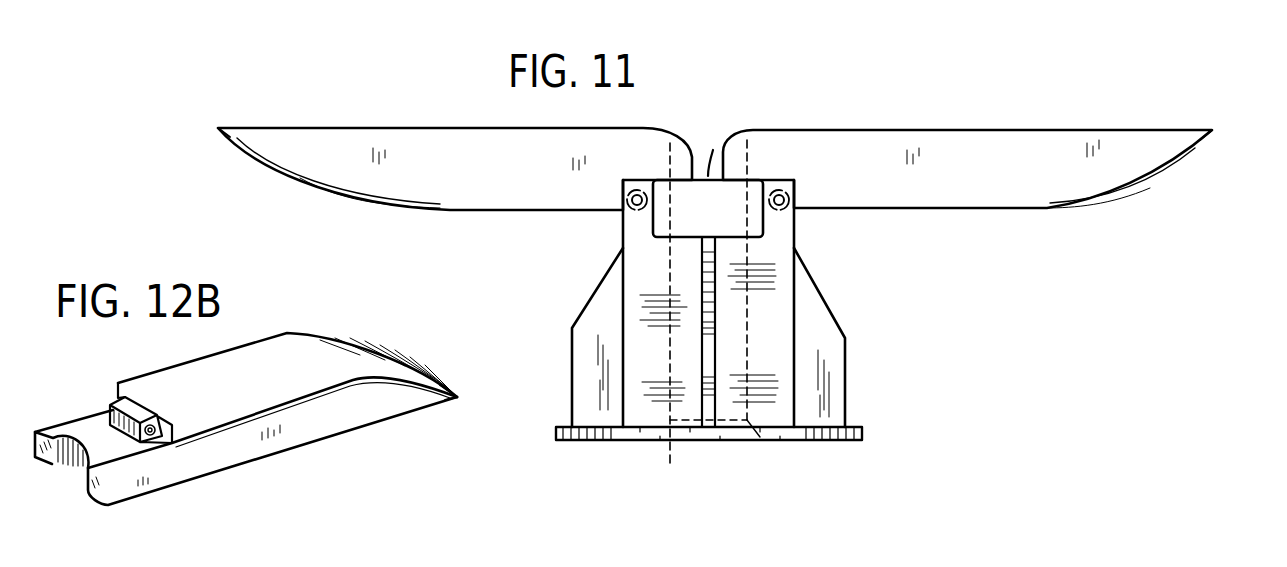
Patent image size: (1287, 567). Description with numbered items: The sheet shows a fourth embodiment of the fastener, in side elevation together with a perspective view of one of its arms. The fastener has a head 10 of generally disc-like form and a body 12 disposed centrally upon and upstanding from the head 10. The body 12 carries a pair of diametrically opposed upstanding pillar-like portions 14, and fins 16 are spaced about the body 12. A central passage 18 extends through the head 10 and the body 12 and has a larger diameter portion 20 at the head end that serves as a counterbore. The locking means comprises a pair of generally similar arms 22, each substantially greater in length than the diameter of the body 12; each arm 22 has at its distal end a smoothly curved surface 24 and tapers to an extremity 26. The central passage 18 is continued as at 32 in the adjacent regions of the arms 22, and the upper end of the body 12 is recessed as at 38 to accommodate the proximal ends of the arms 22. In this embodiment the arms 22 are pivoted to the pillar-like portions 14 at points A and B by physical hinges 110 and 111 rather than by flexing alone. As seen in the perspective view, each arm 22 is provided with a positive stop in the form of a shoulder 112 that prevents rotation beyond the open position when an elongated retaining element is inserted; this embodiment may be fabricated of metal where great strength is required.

In FIG. 11, the head 10 is at (833, 440).
In FIG. 11, the body 12 is at (806, 293).
In FIG. 11, the pillar-like portions 14 is at (627, 259).
In FIG. 11, the fins 16 is at (592, 370).
In FIG. 11, the central passage 18 is at (673, 307).
In FIG. 12B, the central passage 18 is at (68, 437).
In FIG. 11, the larger diameter portion 20 is at (686, 366).
In FIG. 11, the arms 22 is at (462, 193).
In FIG. 12B, the arms 22 is at (313, 430).
In FIG. 11, the smoothly curved surface 24 is at (290, 185).
In FIG. 12B, the smoothly curved surface 24 is at (330, 347).
In FIG. 11, the extremity 26 is at (219, 129).
In FIG. 12B, the extremity 26 is at (432, 382).
In FIG. 11, the continuation of central passage 32 is at (713, 150).
In FIG. 11, the recess 38 is at (710, 215).
In FIG. 11, the physical hinge 110 is at (629, 220).
In FIG. 11, the physical hinge 111 is at (777, 212).
In FIG. 11, the shoulder 112 is at (783, 190).
In FIG. 12B, the shoulder 112 is at (165, 417).